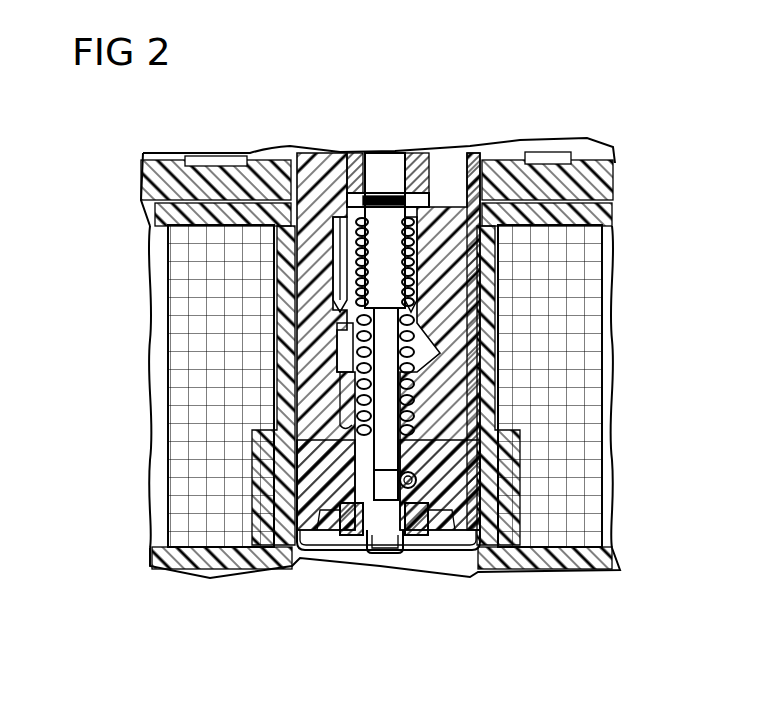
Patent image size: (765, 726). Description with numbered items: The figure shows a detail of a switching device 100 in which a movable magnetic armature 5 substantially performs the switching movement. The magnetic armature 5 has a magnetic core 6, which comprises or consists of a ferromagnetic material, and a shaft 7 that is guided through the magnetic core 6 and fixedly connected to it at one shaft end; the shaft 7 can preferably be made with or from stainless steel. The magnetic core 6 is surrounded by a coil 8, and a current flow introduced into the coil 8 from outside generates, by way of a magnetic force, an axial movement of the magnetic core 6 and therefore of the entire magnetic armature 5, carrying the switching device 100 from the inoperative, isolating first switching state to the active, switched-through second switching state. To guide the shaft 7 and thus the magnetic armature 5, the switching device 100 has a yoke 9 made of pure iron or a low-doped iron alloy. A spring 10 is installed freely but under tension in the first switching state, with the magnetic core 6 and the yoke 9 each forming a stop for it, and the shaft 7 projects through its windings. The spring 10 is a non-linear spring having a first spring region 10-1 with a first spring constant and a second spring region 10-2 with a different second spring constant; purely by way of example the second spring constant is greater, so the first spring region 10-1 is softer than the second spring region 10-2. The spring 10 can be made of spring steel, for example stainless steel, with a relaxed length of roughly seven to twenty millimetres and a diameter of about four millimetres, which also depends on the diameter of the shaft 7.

The switching device 100 is at (568, 96).
The magnetic armature 5 is at (296, 568).
The magnetic core 6 is at (330, 490).
The shaft 7 is at (386, 446).
The coil 8 is at (212, 503).
The yoke 9 is at (445, 243).
The spring 10 is at (410, 283).
The first spring region 10-1 is at (337, 268).
The second spring region 10-2 is at (340, 370).